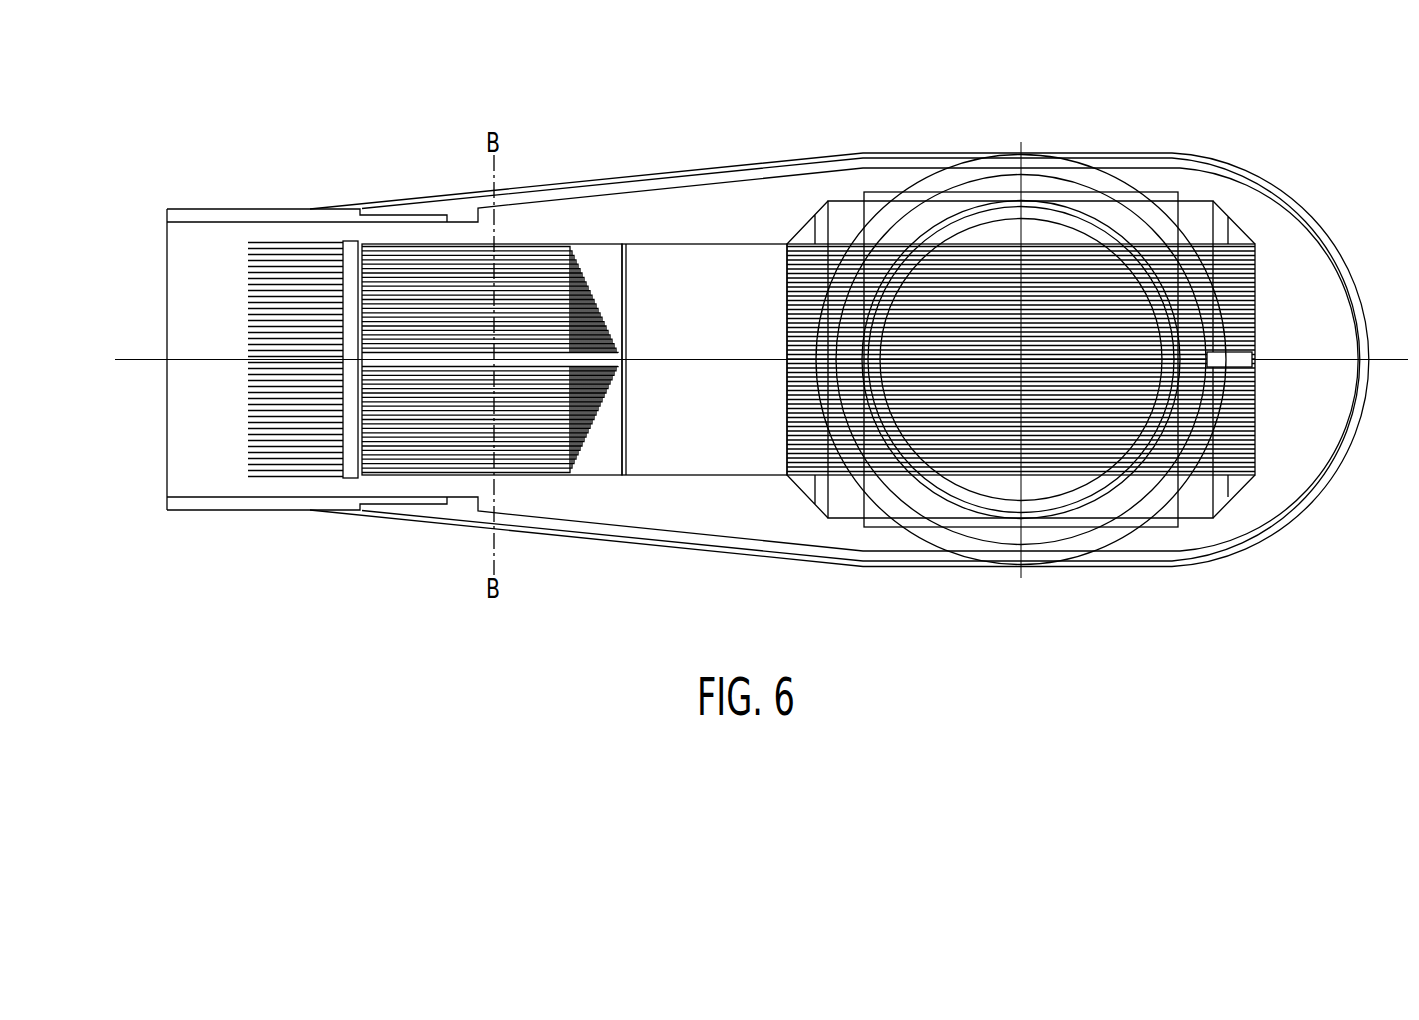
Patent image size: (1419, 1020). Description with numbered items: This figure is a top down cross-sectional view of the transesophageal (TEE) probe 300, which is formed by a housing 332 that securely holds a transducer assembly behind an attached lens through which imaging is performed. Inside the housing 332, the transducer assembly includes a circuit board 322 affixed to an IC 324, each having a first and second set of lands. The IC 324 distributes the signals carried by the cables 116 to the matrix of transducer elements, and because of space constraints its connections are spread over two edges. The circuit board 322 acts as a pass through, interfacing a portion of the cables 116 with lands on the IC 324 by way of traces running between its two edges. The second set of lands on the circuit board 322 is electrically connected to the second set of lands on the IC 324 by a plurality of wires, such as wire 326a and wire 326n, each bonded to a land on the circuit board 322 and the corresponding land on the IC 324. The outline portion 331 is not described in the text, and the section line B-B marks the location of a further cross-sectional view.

The transesophageal probe 300 is at (1226, 88).
The housing 331 is at (732, 160).
The cables 116 is at (236, 298).
The circuit board 322 is at (842, 212).
The IC 324 is at (870, 522).
The wire 326a is at (1256, 246).
The wire 326n is at (1258, 473).
The housing 332 is at (1122, 500).